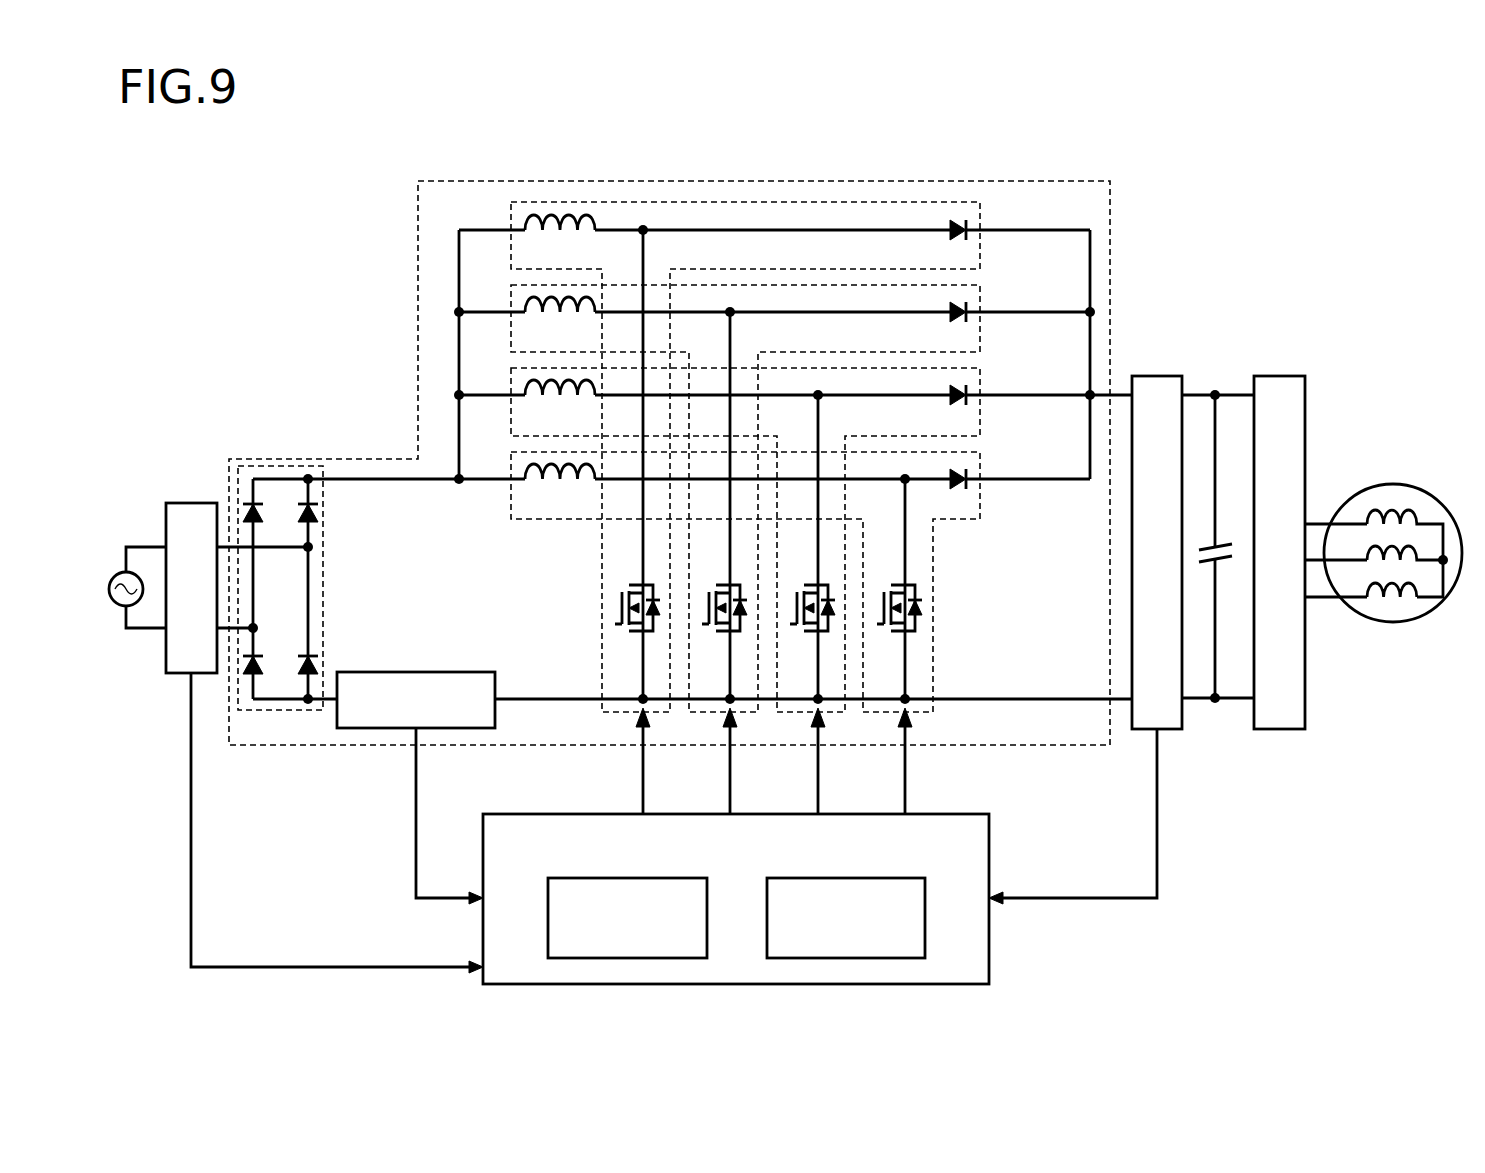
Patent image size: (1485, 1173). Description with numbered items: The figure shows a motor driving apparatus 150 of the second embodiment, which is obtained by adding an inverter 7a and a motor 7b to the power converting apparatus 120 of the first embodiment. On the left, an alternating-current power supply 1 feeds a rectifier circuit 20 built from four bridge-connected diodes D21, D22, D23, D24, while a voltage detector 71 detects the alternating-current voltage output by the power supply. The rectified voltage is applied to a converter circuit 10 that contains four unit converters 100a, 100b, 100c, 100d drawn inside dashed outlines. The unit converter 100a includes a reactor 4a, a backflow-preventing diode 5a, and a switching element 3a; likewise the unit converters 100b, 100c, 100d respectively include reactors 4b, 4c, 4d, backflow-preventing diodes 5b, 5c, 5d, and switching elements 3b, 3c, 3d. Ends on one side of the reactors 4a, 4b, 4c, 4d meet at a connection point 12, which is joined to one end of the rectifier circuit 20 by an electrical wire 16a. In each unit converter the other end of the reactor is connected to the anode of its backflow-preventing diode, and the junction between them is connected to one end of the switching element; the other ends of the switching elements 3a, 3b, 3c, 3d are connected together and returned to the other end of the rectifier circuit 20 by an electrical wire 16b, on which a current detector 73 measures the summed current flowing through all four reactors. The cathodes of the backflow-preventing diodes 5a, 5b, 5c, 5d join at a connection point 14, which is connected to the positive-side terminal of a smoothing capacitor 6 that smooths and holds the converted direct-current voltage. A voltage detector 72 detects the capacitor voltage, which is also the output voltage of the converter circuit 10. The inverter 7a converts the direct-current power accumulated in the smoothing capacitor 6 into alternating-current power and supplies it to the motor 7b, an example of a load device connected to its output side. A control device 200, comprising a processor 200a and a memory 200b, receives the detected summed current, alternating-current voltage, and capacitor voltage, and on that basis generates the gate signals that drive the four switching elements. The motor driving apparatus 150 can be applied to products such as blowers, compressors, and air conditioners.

The alternating-current power supply 1 is at (117, 568).
The voltage detector 71 is at (172, 675).
The rectifier circuit 20 is at (276, 465).
The diode D21 is at (246, 498).
The diode D22 is at (248, 678).
The diode D23 is at (316, 498).
The diode D24 is at (304, 678).
The electrical wire 16a is at (392, 486).
The connection point 12 is at (459, 486).
The current detector 73 is at (438, 672).
The electrical wire 16b is at (542, 698).
The converter circuit 10 is at (1050, 181).
The power converting apparatus 120 is at (655, 150).
The motor driving apparatus 150 is at (950, 125).
The reactor 4a is at (535, 233).
The reactor 4b is at (535, 315).
The reactor 4c is at (535, 398).
The reactor 4d is at (535, 482).
The backflow-preventing diode 5a is at (956, 224).
The backflow-preventing diode 5b is at (956, 306).
The backflow-preventing diode 5c is at (956, 389).
The backflow-preventing diode 5d is at (956, 473).
The unit converter 100a is at (982, 249).
The unit converter 100b is at (982, 332).
The unit converter 100c is at (982, 415).
The unit converter 100d is at (982, 499).
The switching element 3a is at (638, 585).
The switching element 3b is at (725, 585).
The switching element 3c is at (813, 585).
The switching element 3d is at (900, 585).
The connection point 14 is at (1100, 380).
The voltage detector 72 is at (1184, 383).
The smoothing capacitor 6 is at (1220, 537).
The inverter 7a is at (1306, 381).
The motor 7b is at (1393, 484).
The control device 200 is at (990, 965).
The processor 200a is at (679, 878).
The memory 200b is at (891, 878).